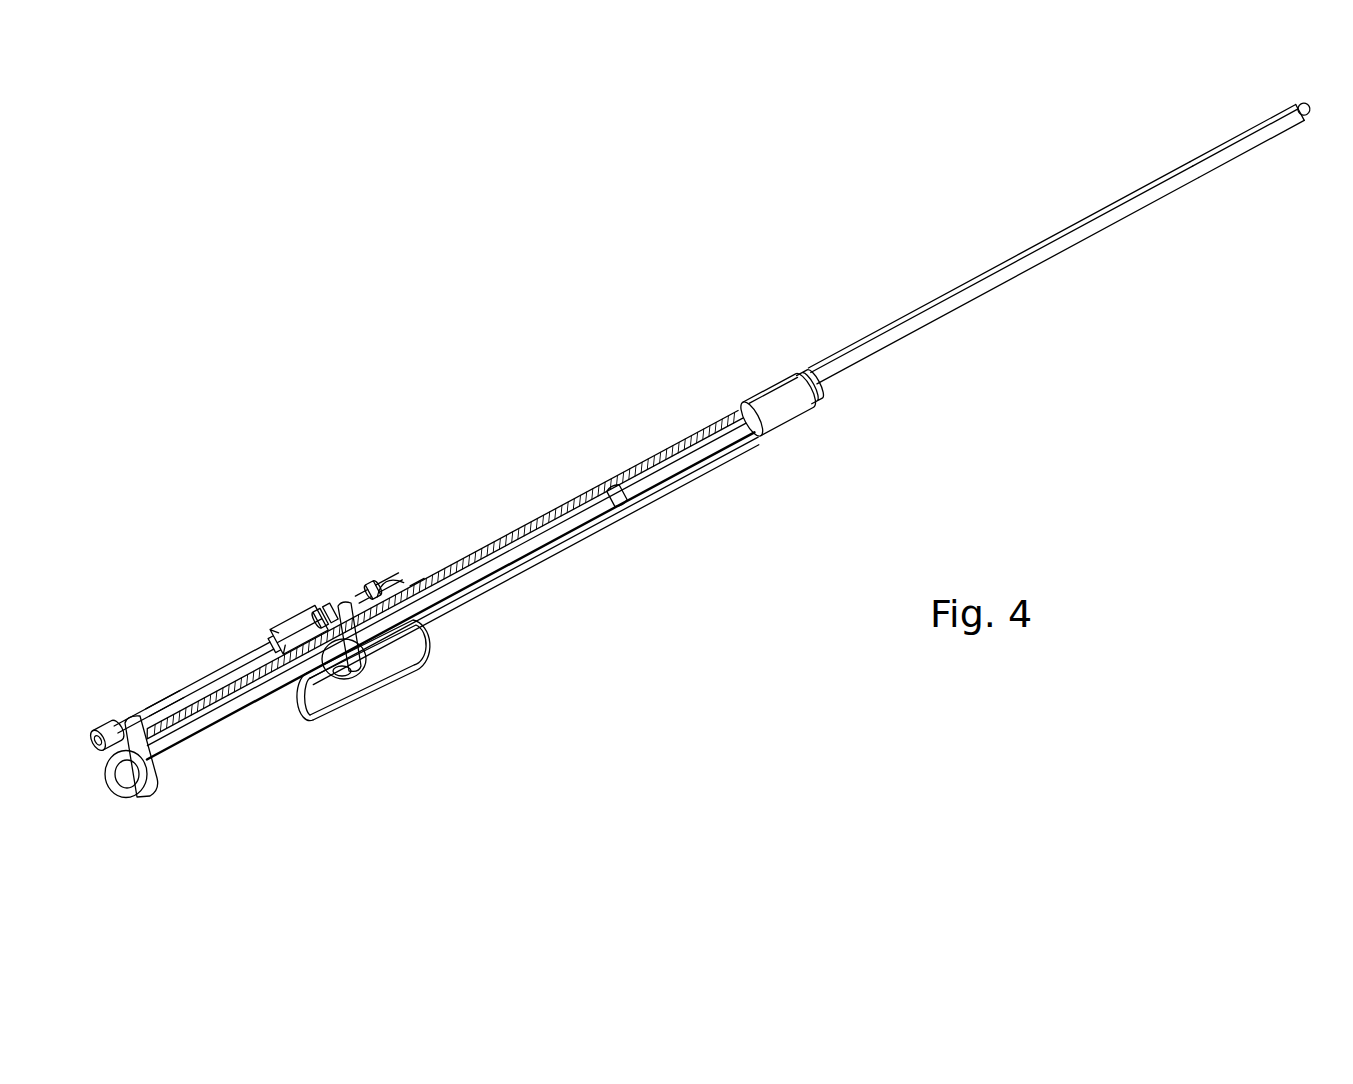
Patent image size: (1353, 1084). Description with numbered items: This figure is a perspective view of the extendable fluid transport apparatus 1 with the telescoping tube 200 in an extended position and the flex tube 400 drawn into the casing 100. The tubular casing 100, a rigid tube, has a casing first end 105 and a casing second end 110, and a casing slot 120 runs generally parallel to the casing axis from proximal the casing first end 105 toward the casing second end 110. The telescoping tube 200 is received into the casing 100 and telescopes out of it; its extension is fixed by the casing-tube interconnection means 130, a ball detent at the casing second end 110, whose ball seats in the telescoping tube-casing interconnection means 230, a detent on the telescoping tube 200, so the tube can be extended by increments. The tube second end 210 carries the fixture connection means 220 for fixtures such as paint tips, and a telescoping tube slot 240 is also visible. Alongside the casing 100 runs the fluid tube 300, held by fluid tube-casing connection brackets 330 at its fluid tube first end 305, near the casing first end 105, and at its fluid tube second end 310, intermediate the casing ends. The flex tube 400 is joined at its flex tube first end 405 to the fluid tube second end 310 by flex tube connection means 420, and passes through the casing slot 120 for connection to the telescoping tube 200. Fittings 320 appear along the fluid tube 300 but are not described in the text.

The extendable fluid transport apparatus 1 is at (697, 246).
The tubular casing 100 is at (426, 584).
The casing first end 105 is at (157, 752).
The casing second end 110 is at (695, 428).
The casing slot 120 is at (300, 718).
The casing-tube interconnection means 130 is at (724, 414).
The telescoping tube 200 is at (977, 288).
The tube second end 210 is at (1258, 135).
The fixture connection means 220 is at (1316, 118).
The telescoping tube-casing interconnection means 230 is at (782, 405).
The telescoping tube slot 240 is at (664, 490).
The fluid tube 300 is at (218, 670).
The fluid tube first end 305 is at (163, 697).
The fluid tube second end 310 is at (275, 633).
The fitting 320 is at (100, 730).
The fluid tube-casing connection bracket 330 is at (148, 785).
The flex tube 400 is at (438, 625).
The flex tube first end 405 is at (368, 588).
The flex tube connection means 420 is at (365, 673).